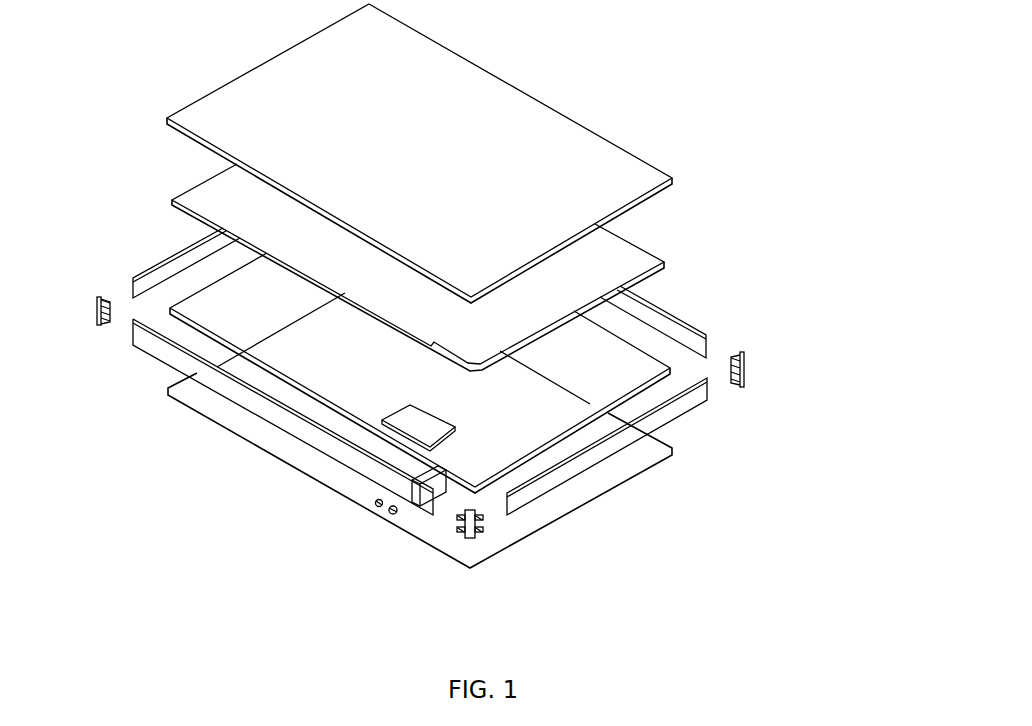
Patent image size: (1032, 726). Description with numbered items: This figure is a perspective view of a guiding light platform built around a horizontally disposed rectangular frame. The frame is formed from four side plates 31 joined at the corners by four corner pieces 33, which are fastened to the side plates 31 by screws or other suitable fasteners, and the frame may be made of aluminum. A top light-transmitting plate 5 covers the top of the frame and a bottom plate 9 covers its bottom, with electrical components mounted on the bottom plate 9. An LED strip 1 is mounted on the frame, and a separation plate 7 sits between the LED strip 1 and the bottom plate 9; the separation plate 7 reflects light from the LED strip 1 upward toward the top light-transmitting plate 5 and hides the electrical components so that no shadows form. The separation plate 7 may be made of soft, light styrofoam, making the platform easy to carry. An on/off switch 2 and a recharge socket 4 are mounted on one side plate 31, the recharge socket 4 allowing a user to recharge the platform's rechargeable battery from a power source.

The LED strip 1 is at (683, 402).
The on/off switch 2 is at (266, 549).
The recharge socket 4 is at (259, 524).
The top light-transmitting plate 5 is at (517, 131).
The separation plate 7 is at (632, 250).
The bottom plate 9 is at (610, 478).
The side plate 31 is at (155, 342).
The corner piece 33 is at (472, 527).